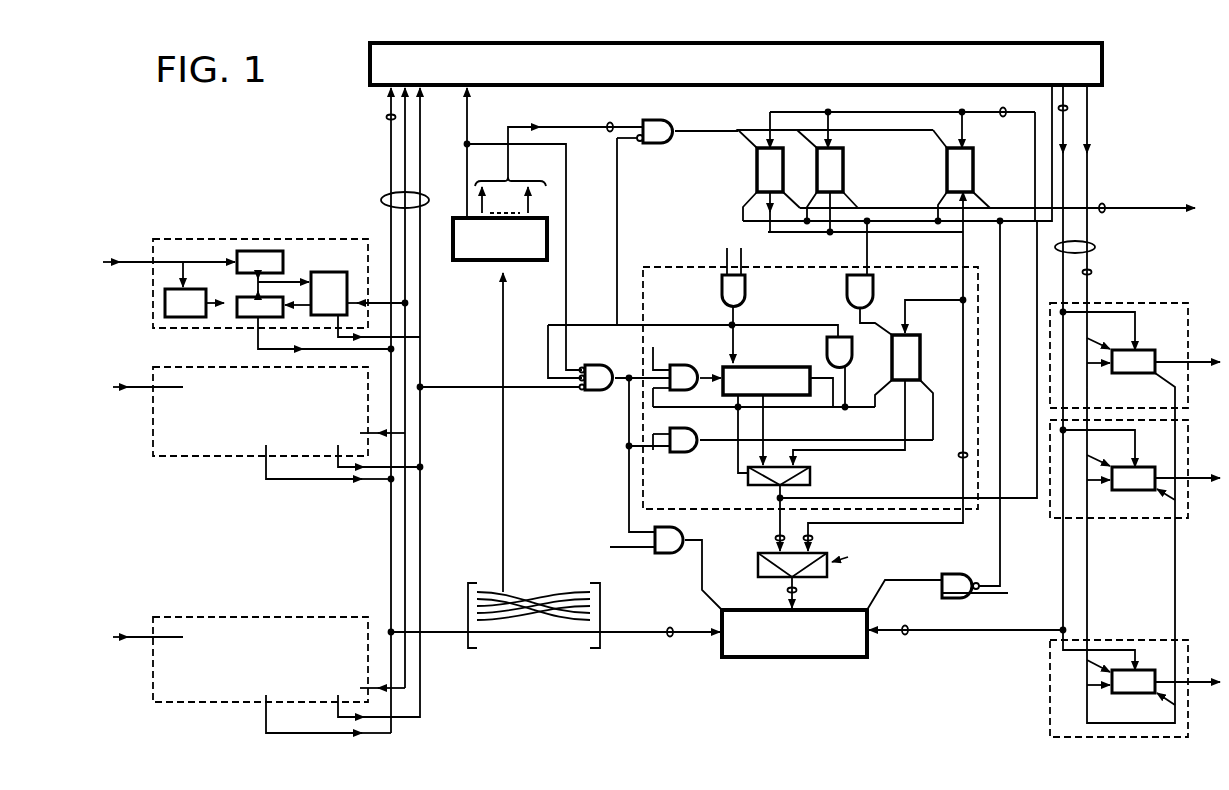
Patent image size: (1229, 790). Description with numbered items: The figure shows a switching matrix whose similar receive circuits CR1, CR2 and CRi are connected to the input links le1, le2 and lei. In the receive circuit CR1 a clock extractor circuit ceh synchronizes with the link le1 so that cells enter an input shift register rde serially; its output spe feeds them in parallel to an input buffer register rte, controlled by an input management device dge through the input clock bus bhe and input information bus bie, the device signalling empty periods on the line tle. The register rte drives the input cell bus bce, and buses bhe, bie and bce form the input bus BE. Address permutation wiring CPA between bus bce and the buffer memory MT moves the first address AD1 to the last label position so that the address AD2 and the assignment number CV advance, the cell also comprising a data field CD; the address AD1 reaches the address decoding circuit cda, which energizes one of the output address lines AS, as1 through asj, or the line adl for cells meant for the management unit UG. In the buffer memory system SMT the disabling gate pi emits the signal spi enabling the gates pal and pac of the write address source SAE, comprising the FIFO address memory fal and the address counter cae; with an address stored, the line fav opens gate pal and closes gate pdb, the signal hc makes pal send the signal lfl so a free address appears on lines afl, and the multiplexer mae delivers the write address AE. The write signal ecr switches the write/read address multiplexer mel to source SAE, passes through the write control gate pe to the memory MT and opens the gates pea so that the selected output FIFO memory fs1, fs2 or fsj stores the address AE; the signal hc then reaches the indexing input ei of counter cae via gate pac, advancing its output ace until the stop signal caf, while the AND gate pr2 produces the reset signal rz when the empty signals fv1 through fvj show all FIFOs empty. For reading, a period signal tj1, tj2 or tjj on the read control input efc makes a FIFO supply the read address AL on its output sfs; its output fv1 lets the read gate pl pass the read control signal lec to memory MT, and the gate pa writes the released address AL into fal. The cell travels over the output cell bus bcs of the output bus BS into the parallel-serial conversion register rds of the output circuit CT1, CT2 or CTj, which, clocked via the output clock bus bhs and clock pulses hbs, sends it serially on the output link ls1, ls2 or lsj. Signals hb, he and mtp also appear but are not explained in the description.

The management unit UG is at (606, 43).
The input information bus bie is at (420, 122).
The input clock bus bhe is at (405, 150).
The input cell bus bce is at (390, 177).
The input bus BE is at (390, 200).
The line adl is at (469, 163).
The address decoding circuit cda is at (488, 262).
The output address line as1 is at (484, 196).
The output address line asj is at (530, 196).
The output address lines AS is at (585, 125).
The gate pea is at (668, 124).
The write signal ecr is at (630, 150).
The output FIFO memory fs1 is at (757, 171).
The output FIFO memory fs2 is at (843, 171).
The output FIFO memory fsj is at (973, 171).
The read control input efc is at (800, 198).
The output fv1 is at (745, 208).
The signal fvj is at (940, 203).
The output sfs is at (768, 232).
The read control signal lec is at (862, 268).
The bus BS is at (1092, 250).
The output clock bus bhs is at (1092, 272).
The clock pulses hbs is at (1138, 723).
The bit clock hb is at (1094, 370).
The output circuit CT1 is at (1148, 283).
The output circuit CT2 is at (1100, 522).
The output circuit CTj is at (1115, 640).
The parallel-serial conversion register rds is at (1145, 350).
The signal tj1 is at (1095, 328).
The signal tj2 is at (1095, 445).
The signal tjj is at (1090, 668).
The output link ls1 is at (1196, 342).
The output link ls2 is at (1196, 458).
The output link lsj is at (1196, 663).
The buffer memory system SMT is at (806, 364).
The write address source SAE is at (928, 282).
The AND gate pr2 is at (722, 290).
The timing signal line mtp is at (548, 333).
The gate pa is at (847, 293).
The gate pdb is at (852, 345).
The address memory fal is at (921, 356).
The read address AL is at (963, 395).
The write address AE is at (1000, 365).
The disabling gate pi is at (605, 390).
The line tle is at (522, 390).
The signal spi is at (629, 492).
The gate pac is at (690, 365).
The signal hc is at (648, 340).
The indexing input ei is at (712, 382).
The line fav is at (852, 407).
The signal rz is at (607, 430).
The address counter cae is at (777, 378).
The signal caf is at (831, 386).
The output ace is at (765, 430).
The write clock AND gate he is at (653, 448).
The gate pal is at (697, 452).
The lines afl is at (856, 452).
The signal lfl is at (918, 445).
The multiplexer mae is at (810, 475).
The write/read address multiplexer mel is at (758, 575).
The write control gate pe is at (668, 555).
The read gate pl is at (958, 574).
The output cell bus bcs is at (1063, 562).
The buffer memory MT is at (867, 655).
The address permutation wiring CPA is at (528, 652).
The first address AD1 is at (488, 590).
The address AD2 is at (572, 592).
The assignment number CV is at (512, 627).
The data field CD is at (545, 630).
The receive circuit CR1 is at (307, 239).
The input link le1 is at (140, 260).
The input shift register rde is at (245, 255).
The output spe is at (258, 283).
The input buffer register rte is at (175, 213).
The clock extractor circuit ceh is at (165, 305).
The input management device dge is at (323, 160).
The receive circuit CR2 is at (240, 457).
The input link le2 is at (147, 388).
The receive circuit CRi is at (300, 617).
The input link lei is at (147, 638).